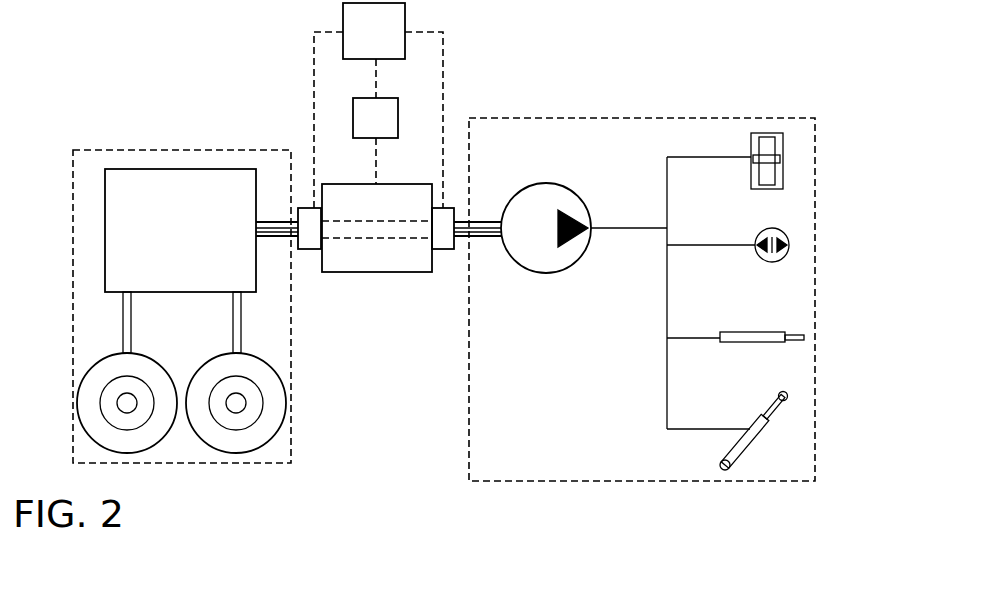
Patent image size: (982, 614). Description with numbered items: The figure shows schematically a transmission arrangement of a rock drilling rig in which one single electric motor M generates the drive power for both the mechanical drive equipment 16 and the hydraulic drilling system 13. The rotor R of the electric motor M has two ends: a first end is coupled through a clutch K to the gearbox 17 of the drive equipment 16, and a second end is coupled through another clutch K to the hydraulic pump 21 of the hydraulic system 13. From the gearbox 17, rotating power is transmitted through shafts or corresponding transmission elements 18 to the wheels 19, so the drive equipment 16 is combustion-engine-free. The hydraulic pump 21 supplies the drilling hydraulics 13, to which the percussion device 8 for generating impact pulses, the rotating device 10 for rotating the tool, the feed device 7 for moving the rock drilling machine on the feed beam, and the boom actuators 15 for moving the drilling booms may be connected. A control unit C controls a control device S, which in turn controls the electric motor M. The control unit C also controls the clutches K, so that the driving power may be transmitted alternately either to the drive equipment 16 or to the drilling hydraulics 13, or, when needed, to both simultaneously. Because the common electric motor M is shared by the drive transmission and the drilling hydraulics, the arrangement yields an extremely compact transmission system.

The drive equipment 16 is at (127, 150).
The gearbox 17 is at (199, 246).
The axle 18 is at (241, 332).
The wheel 19 is at (245, 442).
The clutch K is at (307, 249).
The electric motor M is at (389, 215).
The rotor R is at (367, 238).
The control unit C is at (386, 47).
The control device S is at (385, 132).
The hydraulic system 13 is at (563, 118).
The hydraulic pump 21 is at (537, 253).
The percussion device 8 is at (768, 140).
The rotating device 10 is at (773, 235).
The feed device 7 is at (766, 332).
The boom actuator 15 is at (745, 447).